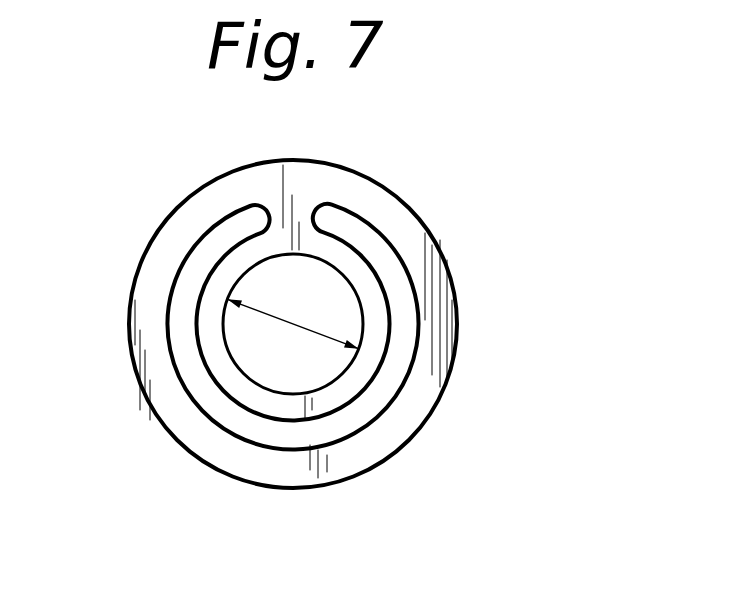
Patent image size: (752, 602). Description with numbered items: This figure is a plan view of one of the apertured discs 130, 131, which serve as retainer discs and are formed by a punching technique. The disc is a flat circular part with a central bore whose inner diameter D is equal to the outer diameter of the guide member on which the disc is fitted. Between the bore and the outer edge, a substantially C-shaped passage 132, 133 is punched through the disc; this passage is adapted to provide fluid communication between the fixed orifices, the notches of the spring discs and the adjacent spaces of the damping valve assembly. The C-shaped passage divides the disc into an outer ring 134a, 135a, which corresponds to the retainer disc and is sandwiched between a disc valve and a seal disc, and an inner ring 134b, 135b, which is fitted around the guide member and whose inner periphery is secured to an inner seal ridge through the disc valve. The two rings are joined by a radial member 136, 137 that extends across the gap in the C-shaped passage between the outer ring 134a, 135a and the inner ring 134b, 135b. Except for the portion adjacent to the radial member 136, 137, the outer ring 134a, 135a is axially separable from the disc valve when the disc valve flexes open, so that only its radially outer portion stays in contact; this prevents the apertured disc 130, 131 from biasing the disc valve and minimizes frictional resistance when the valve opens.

The apertured disc 130 is at (348, 356).
The apertured disc 131 is at (388, 462).
The C-shaped passage 132 is at (374, 327).
The C-shaped passage 133 is at (392, 389).
The outer ring 134a is at (293, 407).
The outer ring 135a is at (274, 467).
The inner ring 134b is at (205, 388).
The inner ring 135b is at (240, 388).
The radial member 136 is at (441, 209).
The radial member 137 is at (288, 218).
The inner diameter D is at (313, 330).